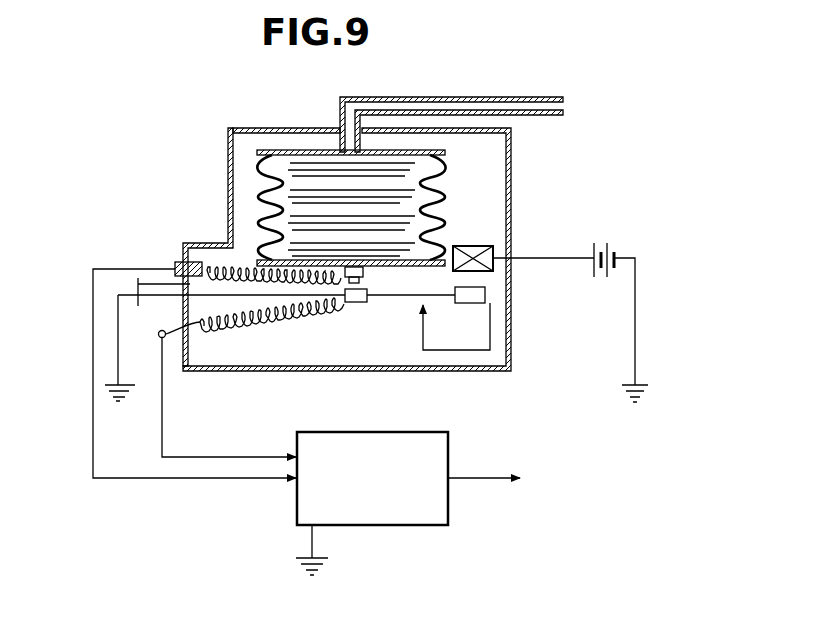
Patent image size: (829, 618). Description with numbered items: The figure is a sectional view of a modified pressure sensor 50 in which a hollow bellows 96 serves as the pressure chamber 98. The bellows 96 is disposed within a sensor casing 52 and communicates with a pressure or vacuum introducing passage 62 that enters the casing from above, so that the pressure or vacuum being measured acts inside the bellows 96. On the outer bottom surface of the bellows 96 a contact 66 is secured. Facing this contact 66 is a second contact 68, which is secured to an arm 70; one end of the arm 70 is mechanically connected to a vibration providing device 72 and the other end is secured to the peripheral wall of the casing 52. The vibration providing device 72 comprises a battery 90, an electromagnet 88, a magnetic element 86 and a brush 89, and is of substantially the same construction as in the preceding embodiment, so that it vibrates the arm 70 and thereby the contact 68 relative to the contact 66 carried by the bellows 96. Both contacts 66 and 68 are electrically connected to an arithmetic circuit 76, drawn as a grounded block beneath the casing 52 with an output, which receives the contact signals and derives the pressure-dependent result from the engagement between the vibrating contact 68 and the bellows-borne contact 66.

The housing 50 is at (515, 158).
The sensor casing 52 is at (229, 162).
The pressure or vacuum introducing passage 62 is at (520, 112).
The contact 66 is at (351, 267).
The contact 68 is at (357, 302).
The arm 70 is at (314, 300).
The vibration providing device 72 is at (497, 245).
The arithmetic circuit 76 is at (377, 432).
The magnetic element 86 is at (478, 303).
The electromagnet 88 is at (474, 246).
The brush 89 is at (428, 300).
The battery 90 is at (612, 244).
The hollow bellows 96 is at (438, 168).
The pressure chamber 98 is at (302, 160).